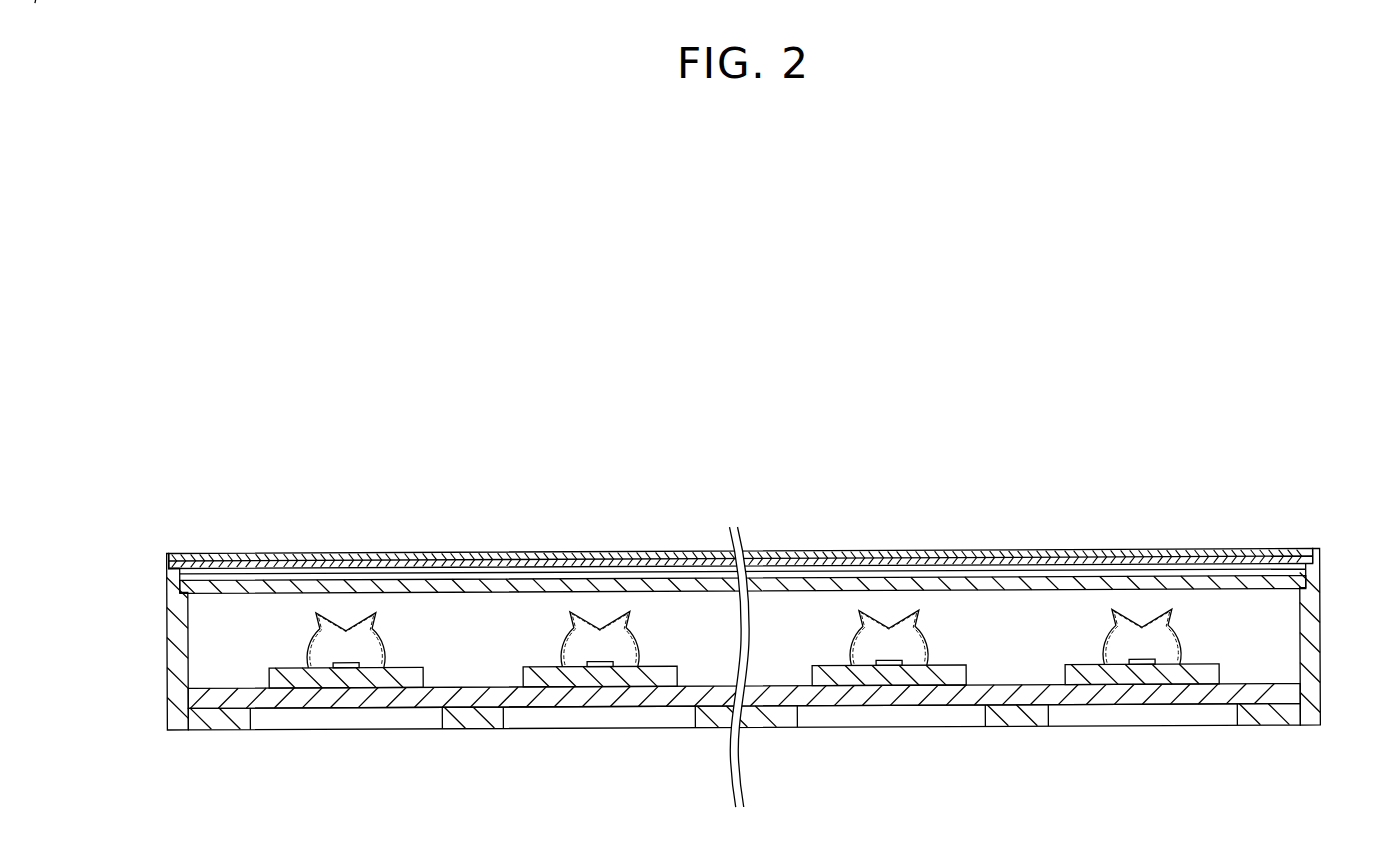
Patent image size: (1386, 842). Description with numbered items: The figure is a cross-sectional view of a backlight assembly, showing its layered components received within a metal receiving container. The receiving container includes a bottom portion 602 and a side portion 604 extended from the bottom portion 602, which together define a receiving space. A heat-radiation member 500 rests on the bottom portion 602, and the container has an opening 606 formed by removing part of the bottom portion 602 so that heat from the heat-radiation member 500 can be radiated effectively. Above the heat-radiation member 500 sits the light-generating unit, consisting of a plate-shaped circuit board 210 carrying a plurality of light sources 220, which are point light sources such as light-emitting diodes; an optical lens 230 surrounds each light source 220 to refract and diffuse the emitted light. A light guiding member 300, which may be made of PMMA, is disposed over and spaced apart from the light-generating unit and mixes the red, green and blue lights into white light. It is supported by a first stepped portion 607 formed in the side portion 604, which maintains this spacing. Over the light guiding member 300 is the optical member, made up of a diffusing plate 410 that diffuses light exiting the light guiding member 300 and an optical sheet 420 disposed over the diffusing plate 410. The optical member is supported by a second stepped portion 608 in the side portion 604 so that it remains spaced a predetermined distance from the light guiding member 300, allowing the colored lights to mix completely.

The circuit board 210 is at (1219, 673).
The light source 220 is at (1180, 635).
The optical lens 230 is at (343, 627).
The light guiding member 300 is at (740, 541).
The diffusing plate 410 is at (1198, 578).
The optical sheet 420 is at (1138, 551).
The heat-radiation member 500 is at (1290, 695).
The bottom portion 602 is at (1257, 715).
The side portion 604 is at (1306, 610).
The opening 606 is at (318, 721).
The first stepped portion 607 is at (167, 580).
The second stepped portion 608 is at (167, 557).